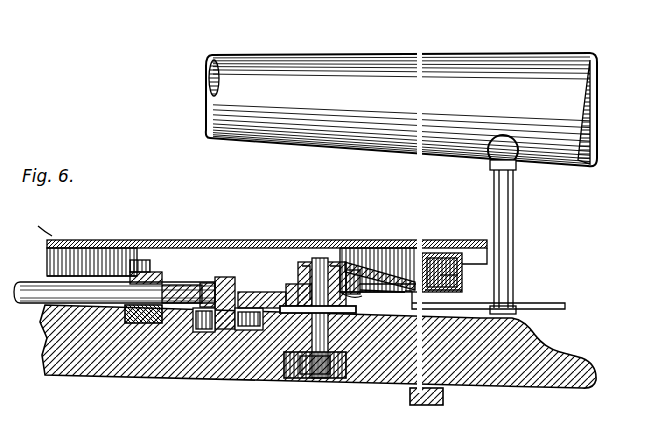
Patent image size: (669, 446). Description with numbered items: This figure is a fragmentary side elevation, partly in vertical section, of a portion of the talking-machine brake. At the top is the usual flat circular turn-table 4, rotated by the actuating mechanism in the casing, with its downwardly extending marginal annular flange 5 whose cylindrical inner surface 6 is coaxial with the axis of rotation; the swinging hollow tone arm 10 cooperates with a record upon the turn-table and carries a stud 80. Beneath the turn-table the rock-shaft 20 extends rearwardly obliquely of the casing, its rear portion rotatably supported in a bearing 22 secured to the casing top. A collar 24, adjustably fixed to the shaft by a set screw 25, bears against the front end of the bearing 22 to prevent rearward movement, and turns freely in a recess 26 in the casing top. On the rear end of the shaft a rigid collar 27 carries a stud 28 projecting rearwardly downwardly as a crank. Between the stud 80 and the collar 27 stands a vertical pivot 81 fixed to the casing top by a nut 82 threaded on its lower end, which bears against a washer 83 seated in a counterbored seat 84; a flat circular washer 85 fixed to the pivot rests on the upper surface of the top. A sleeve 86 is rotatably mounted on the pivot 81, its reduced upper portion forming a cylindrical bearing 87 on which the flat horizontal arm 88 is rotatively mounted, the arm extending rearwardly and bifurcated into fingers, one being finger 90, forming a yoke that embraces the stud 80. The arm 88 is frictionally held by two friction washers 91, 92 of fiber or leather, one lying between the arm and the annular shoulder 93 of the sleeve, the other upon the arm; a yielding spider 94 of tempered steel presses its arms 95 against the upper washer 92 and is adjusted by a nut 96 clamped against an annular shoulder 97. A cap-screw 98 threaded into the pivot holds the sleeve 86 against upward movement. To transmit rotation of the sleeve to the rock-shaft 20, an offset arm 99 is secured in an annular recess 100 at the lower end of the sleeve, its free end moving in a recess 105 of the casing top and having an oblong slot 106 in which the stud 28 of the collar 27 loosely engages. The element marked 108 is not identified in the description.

The turn-table 4 is at (37, 226).
The marginal annular flange 5 is at (462, 290).
The cylindrical inner surface 6 is at (458, 275).
The tone arm 10 is at (376, 66).
The rock-shaft 20 is at (32, 283).
The bearing 22 is at (182, 262).
The collar 24 is at (134, 272).
The set screw 25 is at (150, 262).
The recess 26 is at (98, 340).
The collar 27 is at (225, 277).
The stud 28 is at (218, 332).
The stud 80 is at (513, 243).
The vertical pivot 81 is at (345, 315).
The nut 82 is at (326, 362).
The washer 83 is at (345, 372).
The counterbored seat 84 is at (290, 314).
The flat circular washer 85 is at (422, 400).
The sleeve 86 is at (365, 268).
The cylindrical bearing 87 is at (296, 280).
The flat horizontal arm 88 is at (458, 270).
The finger 90 is at (552, 303).
The friction washer 91 is at (362, 296).
The friction washer 92 is at (480, 252).
The annular shoulder 93 is at (292, 306).
The yielding spider 94 is at (385, 288).
The arms 95 is at (430, 253).
The nut 96 is at (302, 264).
The annular shoulder 97 is at (320, 262).
The cap-screw 98 is at (350, 270).
The offset arm 99 is at (155, 323).
The annular recess 100 is at (286, 300).
The recess 105 is at (170, 303).
The oblong slot 106 is at (205, 335).
The collar 108 is at (208, 284).